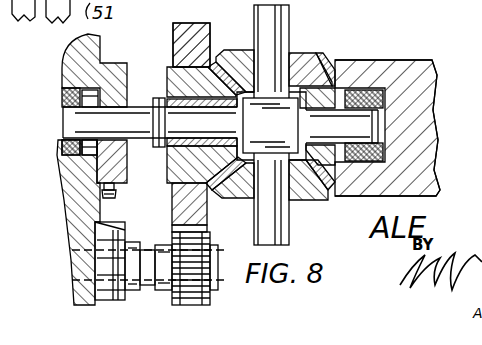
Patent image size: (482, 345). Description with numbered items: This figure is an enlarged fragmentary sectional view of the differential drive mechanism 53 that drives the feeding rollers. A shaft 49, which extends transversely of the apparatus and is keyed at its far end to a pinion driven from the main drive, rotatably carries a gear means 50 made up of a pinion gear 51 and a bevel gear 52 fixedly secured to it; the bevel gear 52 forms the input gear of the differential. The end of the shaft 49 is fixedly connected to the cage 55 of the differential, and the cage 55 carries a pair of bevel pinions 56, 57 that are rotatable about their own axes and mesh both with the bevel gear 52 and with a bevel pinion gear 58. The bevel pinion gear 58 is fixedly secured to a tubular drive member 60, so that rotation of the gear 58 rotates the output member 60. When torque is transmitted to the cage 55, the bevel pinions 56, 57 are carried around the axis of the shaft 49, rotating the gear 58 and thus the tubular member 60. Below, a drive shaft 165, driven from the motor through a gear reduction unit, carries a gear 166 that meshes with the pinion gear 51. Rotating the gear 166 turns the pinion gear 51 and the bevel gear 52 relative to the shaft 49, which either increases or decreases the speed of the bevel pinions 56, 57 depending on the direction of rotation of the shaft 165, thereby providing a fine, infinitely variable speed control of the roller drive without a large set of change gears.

The shaft 49 is at (63, 124).
The gear means 50 is at (220, 37).
The pinion gear 51 is at (173, 42).
The bevel gear 52 is at (212, 188).
The differential drive mechanism 53 is at (292, 33).
The cage 55 is at (243, 125).
The bevel pinion 56 is at (355, 92).
The bevel pinion 57 is at (320, 197).
The bevel pinion gear 58 is at (352, 62).
The tubular drive member 60 is at (433, 78).
The drive shaft 165 is at (143, 282).
The gear 166 is at (200, 305).